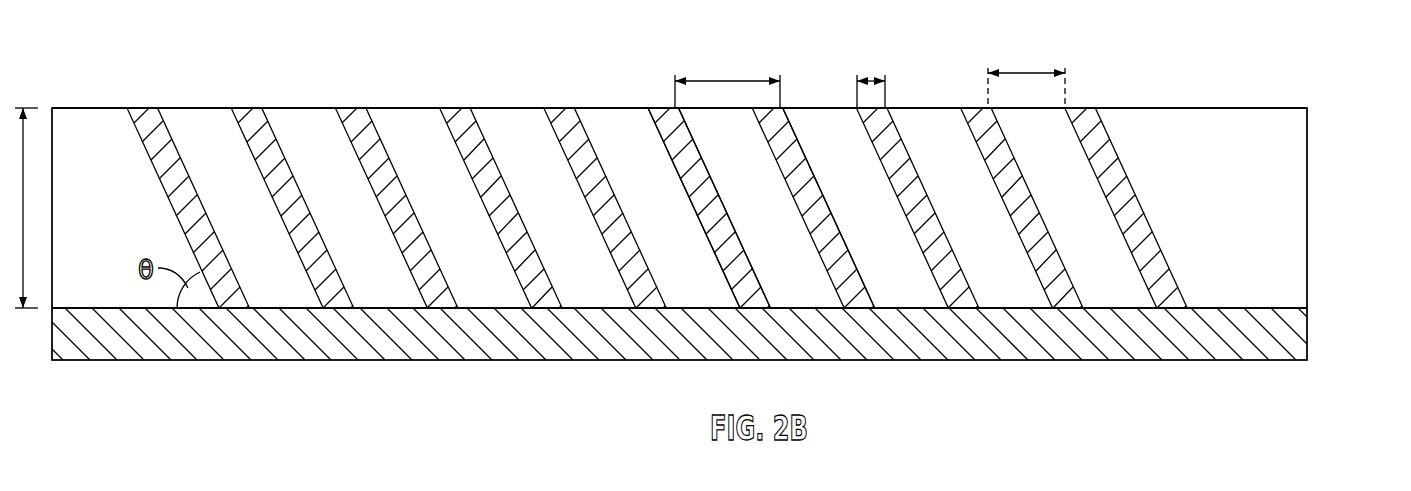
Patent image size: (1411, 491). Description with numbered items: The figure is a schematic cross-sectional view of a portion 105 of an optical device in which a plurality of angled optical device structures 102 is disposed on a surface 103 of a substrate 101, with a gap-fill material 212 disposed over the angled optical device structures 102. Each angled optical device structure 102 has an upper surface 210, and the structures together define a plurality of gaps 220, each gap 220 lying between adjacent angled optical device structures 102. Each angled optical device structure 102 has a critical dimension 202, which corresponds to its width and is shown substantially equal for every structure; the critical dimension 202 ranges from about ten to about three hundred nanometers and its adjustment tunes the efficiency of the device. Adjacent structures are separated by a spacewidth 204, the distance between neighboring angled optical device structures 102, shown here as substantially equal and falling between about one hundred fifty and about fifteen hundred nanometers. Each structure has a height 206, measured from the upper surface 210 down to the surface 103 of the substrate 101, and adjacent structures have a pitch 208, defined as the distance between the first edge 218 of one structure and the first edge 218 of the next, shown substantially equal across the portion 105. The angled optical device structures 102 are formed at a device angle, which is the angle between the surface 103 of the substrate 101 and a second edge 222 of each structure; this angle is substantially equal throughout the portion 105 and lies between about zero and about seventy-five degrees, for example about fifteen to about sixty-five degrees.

The substrate 101 is at (1307, 330).
The angled optical device structure 102 is at (1131, 177).
The surface 103 is at (1228, 308).
The portion 105 is at (1176, 48).
The critical dimension 202 is at (868, 80).
The spacewidth 204 is at (1020, 72).
The height 206 is at (23, 223).
The pitch 208 is at (738, 80).
The upper surface 210 is at (1080, 108).
The gap-fill material 212 is at (1307, 200).
The first edge 218 is at (719, 197).
The gap 220 is at (926, 134).
The second edge 222 is at (670, 162).